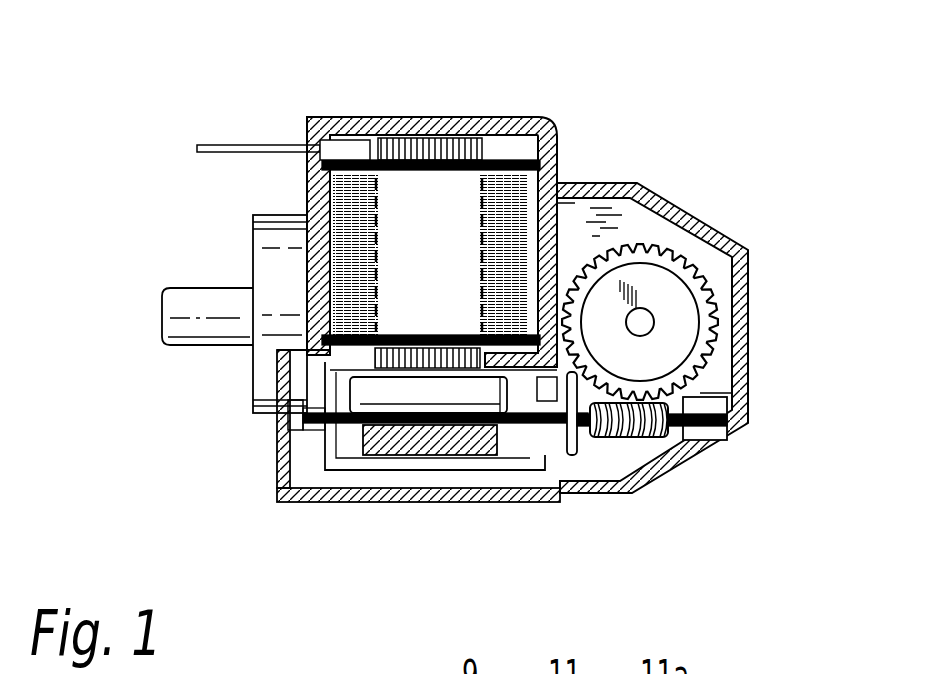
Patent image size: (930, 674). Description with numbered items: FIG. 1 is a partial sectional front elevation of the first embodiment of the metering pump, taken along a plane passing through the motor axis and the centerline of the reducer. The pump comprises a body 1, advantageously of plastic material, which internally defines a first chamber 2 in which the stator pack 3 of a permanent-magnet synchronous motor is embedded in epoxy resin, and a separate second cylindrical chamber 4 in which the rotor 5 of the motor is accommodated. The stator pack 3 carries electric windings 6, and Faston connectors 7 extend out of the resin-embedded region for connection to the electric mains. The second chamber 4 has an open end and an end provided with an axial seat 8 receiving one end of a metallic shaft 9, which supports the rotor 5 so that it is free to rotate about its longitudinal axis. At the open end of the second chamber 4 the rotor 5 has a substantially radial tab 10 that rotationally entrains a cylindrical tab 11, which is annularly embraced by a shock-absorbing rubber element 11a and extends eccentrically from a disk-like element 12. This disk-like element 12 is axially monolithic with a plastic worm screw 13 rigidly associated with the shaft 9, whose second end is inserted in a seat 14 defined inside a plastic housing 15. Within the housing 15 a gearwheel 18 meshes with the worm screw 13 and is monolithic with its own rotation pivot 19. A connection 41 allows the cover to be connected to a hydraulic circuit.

The body 1 is at (392, 117).
The first chamber 2 is at (498, 140).
The stator pack 3 is at (462, 143).
The second cylindrical chamber 4 is at (330, 470).
The rotor 5 is at (447, 447).
The electric windings 6 is at (335, 215).
The Faston connectors 7 is at (237, 147).
The axial seat 8 is at (305, 417).
The metallic shaft 9 is at (345, 405).
The radial tab 10 is at (543, 455).
The cylindrical tab 11 is at (520, 460).
The shock-absorbing rubber element 11a is at (565, 493).
The disk-like element 12 is at (632, 450).
The worm screw 13 is at (672, 448).
The seat 14 is at (725, 437).
The housing 15 is at (742, 368).
The gearwheel 18 is at (657, 277).
The rotation pivot 19 is at (647, 323).
The connection 41 is at (180, 295).